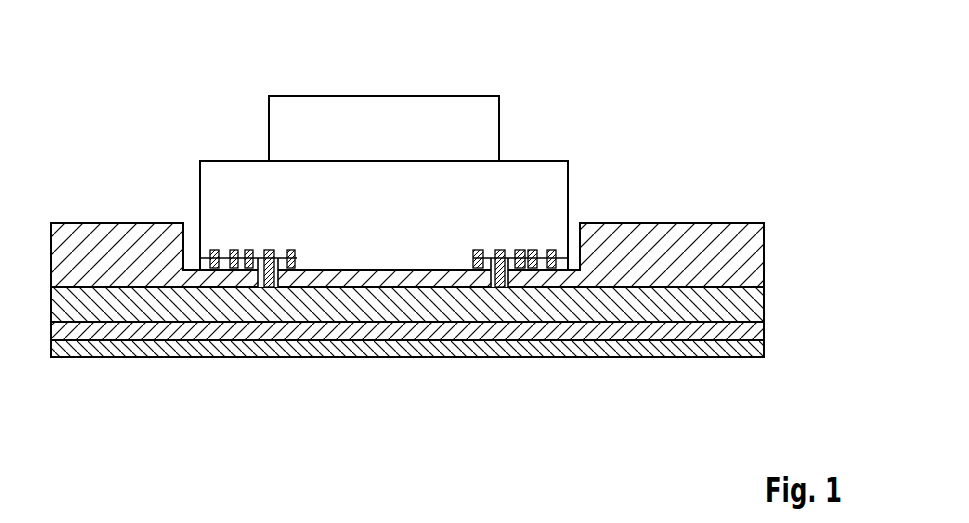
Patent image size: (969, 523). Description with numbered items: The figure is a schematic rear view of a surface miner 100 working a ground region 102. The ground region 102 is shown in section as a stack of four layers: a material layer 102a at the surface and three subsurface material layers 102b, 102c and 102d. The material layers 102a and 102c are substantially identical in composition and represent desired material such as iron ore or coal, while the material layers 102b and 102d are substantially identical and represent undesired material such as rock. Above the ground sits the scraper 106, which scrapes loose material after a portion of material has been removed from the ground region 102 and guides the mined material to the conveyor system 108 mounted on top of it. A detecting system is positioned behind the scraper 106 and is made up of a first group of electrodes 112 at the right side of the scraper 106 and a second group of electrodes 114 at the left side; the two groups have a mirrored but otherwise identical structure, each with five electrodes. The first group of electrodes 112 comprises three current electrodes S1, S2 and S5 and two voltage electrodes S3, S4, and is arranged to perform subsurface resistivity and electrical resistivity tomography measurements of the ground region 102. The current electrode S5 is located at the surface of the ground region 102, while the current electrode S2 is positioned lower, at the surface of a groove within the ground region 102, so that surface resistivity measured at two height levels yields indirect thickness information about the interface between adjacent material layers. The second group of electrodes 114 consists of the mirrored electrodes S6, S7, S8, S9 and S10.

The surface miner 100 is at (446, 233).
The ground region 102 is at (446, 305).
The material layer 102a is at (750, 262).
The material layer 102b is at (753, 307).
The material layer 102c is at (752, 332).
The material layer 102d is at (753, 352).
The scraper 106 is at (228, 161).
The conveyor system 108 is at (343, 96).
The first group of electrodes 112 is at (577, 204).
The second group of electrodes 114 is at (166, 203).
The current electrode S1 is at (480, 248).
The current electrode S2 is at (500, 248).
The voltage electrode S3 is at (520, 248).
The voltage electrode S4 is at (531, 268).
The current electrode S5 is at (553, 268).
The electrode S6 is at (215, 270).
The electrode S7 is at (235, 250).
The electrode S8 is at (248, 250).
The electrode S9 is at (265, 272).
The electrode S10 is at (295, 270).